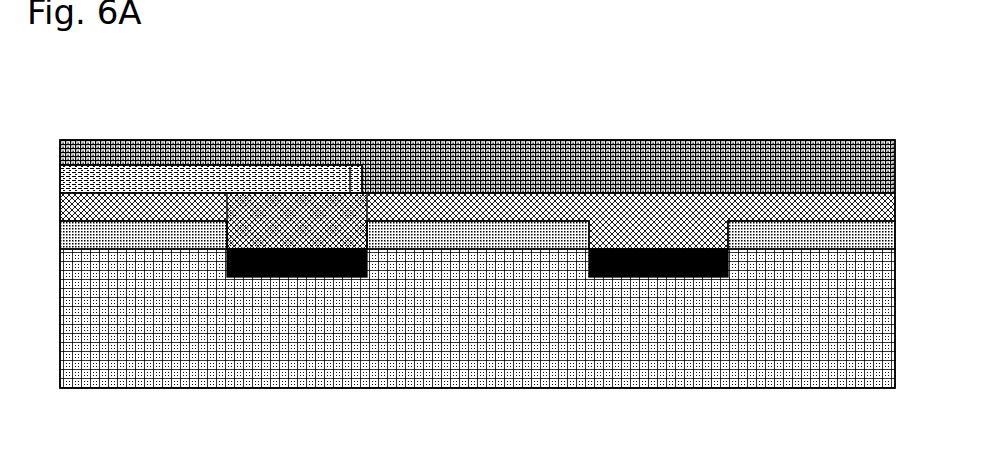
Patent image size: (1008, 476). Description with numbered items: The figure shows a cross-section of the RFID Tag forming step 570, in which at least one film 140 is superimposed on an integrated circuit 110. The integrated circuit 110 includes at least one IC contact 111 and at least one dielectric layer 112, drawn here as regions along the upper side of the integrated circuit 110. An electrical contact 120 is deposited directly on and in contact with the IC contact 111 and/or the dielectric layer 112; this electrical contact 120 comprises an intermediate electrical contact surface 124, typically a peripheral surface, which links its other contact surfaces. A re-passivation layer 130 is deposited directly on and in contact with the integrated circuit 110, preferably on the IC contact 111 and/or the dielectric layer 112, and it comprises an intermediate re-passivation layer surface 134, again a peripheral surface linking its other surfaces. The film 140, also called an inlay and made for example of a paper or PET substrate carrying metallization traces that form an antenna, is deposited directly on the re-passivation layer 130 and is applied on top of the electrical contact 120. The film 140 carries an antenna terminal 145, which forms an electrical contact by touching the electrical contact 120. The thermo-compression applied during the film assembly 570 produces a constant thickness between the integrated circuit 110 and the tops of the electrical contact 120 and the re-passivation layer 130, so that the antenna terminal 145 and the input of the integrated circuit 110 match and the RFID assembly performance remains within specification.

The RFID Tag forming step 570 is at (101, 123).
The integrated circuit 110 is at (690, 377).
The IC contact 111 is at (262, 279).
The dielectric layer 112 is at (560, 240).
The electrical contact 120 is at (275, 203).
The intermediate electrical contact surface 124 is at (387, 198).
The re-passivation layer 130 is at (755, 202).
The intermediate re-passivation layer surface 134 is at (382, 221).
The film 140 is at (775, 148).
The antenna terminal 145 is at (210, 185).